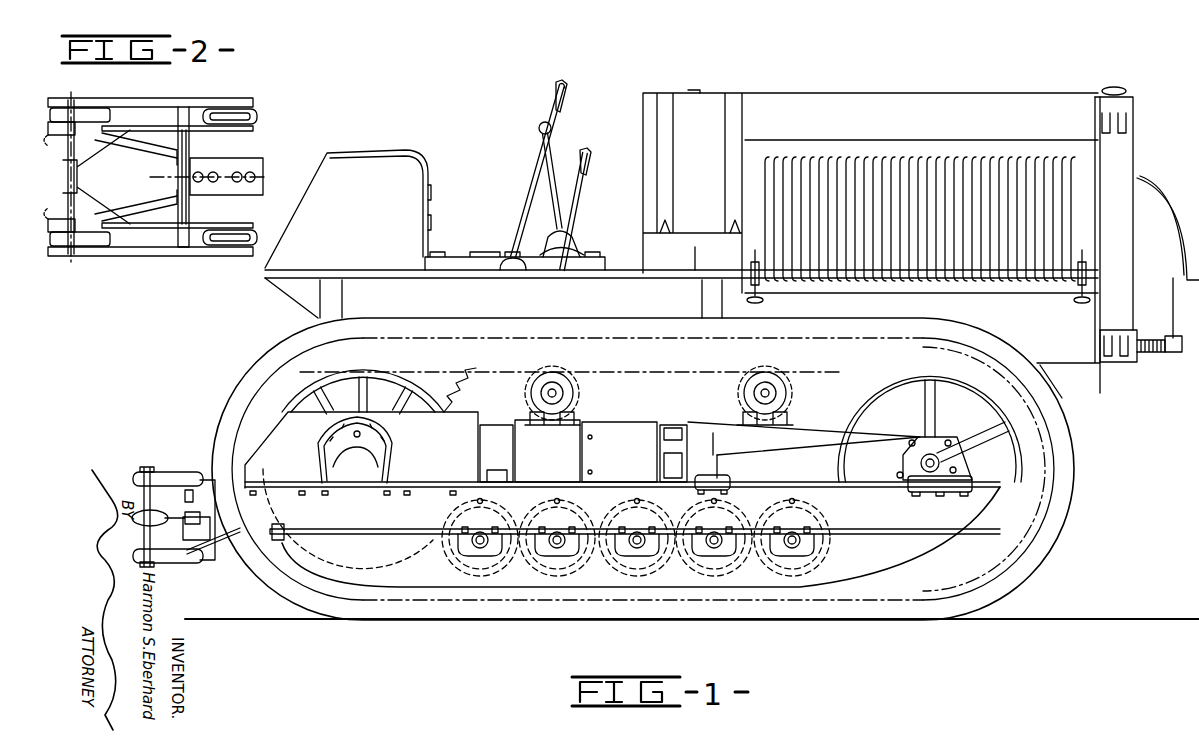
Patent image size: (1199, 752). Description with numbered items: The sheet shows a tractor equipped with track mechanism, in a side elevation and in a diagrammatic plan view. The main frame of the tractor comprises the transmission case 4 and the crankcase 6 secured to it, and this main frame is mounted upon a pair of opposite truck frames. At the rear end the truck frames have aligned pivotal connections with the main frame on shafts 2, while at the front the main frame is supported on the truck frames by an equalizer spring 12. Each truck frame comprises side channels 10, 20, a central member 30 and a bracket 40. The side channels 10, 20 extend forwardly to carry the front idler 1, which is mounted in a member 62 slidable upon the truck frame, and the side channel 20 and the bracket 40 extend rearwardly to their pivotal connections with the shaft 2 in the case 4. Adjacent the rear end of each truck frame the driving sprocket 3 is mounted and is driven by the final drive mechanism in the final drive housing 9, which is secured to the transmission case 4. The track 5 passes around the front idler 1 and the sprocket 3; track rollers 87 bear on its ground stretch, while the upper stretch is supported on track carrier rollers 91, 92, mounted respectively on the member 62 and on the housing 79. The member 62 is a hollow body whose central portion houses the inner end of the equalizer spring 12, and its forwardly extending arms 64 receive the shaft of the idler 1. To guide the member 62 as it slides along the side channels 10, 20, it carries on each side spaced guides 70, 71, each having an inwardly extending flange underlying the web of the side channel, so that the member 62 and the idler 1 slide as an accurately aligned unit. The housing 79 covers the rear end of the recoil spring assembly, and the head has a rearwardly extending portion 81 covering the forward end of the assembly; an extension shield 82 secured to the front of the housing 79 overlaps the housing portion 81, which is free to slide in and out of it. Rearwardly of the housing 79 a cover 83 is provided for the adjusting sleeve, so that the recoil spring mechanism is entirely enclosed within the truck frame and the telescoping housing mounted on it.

In FIG. 1, the front idler 1 is at (862, 396).
In FIG. 2, the front idler 1 is at (258, 112).
In FIG. 2, the shaft 2 is at (66, 150).
In FIG. 1, the driving sprocket 3 is at (452, 408).
In FIG. 2, the driving sprocket 3 is at (90, 108).
In FIG. 1, the transmission case 4 is at (650, 413).
In FIG. 2, the transmission case 4 is at (152, 185).
In FIG. 1, the track 5 is at (995, 340).
In FIG. 1, the crankcase 6 is at (825, 408).
In FIG. 2, the crankcase 6 is at (229, 168).
In FIG. 1, the final drive housing 9 is at (388, 385).
In FIG. 2, the final drive housing 9 is at (48, 100).
In FIG. 2, the side channel 10 is at (255, 128).
In FIG. 2, the equalizer spring 12 is at (190, 144).
In FIG. 1, the side channel 20 is at (398, 518).
In FIG. 2, the side channel 20 is at (214, 98).
In FIG. 2, the central member 30 is at (159, 125).
In FIG. 2, the bracket 40 is at (112, 138).
In FIG. 1, the member 62 is at (816, 449).
In FIG. 1, the arm 64 is at (875, 475).
In FIG. 1, the guide 70 is at (950, 482).
In FIG. 1, the guide 71 is at (732, 470).
In FIG. 1, the housing 79 is at (556, 461).
In FIG. 1, the housing portion 81 is at (665, 425).
In FIG. 1, the extension shield 82 is at (623, 456).
In FIG. 1, the cover 83 is at (505, 455).
In FIG. 1, the track roller 87 is at (474, 574).
In FIG. 1, the track carrier roller 91 is at (777, 372).
In FIG. 1, the track carrier roller 92 is at (565, 372).